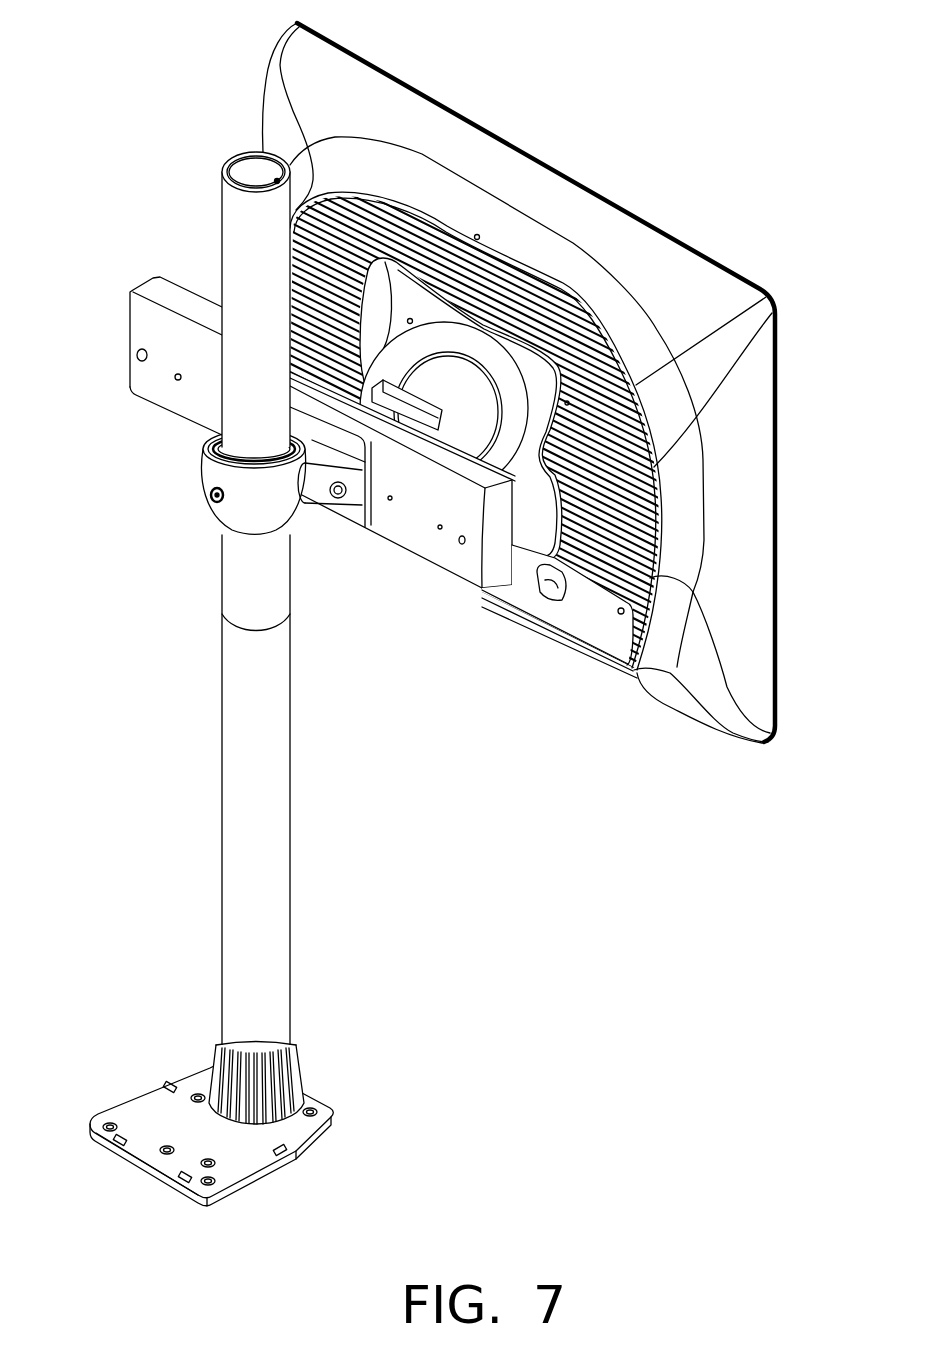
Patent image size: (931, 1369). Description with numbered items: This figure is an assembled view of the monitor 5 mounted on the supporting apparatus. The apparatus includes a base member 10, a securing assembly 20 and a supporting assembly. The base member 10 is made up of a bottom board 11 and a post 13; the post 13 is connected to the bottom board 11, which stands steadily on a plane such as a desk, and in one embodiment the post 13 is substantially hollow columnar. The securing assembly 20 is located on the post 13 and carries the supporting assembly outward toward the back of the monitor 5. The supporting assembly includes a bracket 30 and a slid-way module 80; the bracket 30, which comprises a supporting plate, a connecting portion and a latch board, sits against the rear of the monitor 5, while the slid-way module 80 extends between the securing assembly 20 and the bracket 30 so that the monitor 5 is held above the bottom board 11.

The monitor 5 is at (742, 508).
The base member 10 is at (192, 679).
The bottom board 11 is at (160, 1107).
The post 13 is at (242, 1003).
The securing assembly 20 is at (305, 522).
The bracket 30 is at (525, 363).
The slid-way module 80 is at (453, 563).